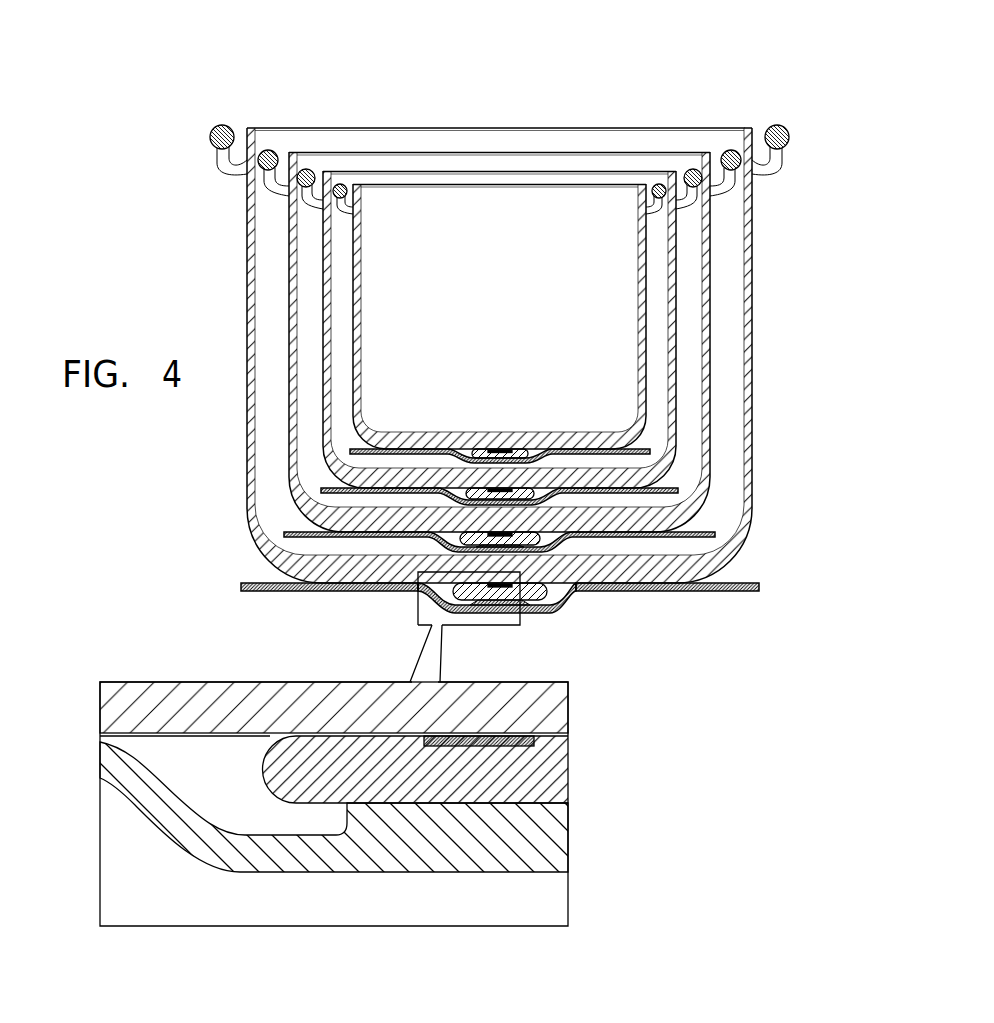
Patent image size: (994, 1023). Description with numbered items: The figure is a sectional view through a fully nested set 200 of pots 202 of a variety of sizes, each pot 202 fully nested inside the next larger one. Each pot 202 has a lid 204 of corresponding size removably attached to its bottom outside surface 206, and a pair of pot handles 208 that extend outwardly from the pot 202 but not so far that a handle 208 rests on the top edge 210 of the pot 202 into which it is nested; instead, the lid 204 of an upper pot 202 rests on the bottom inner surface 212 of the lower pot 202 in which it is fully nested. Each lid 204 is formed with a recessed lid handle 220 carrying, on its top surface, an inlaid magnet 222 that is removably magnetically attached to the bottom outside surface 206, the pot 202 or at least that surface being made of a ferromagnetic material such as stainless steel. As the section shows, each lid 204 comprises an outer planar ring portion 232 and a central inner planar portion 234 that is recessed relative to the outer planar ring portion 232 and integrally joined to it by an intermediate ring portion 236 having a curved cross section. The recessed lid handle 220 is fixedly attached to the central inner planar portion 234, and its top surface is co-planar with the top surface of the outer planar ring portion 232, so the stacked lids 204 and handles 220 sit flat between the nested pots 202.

The fully nested set 200 is at (746, 87).
The pot 202 is at (353, 268).
The lid 204 is at (728, 590).
The bottom outside surface 206 is at (447, 457).
The pot handle 208 is at (277, 186).
The top edge 210 is at (674, 176).
The bottom inner surface 212 is at (588, 510).
The recessed lid handle 220 is at (553, 770).
The inlaid magnet 222 is at (500, 627).
The outer planar ring portion 232 is at (600, 538).
The central inner planar portion 234 is at (498, 620).
The intermediate ring portion 236 is at (560, 600).